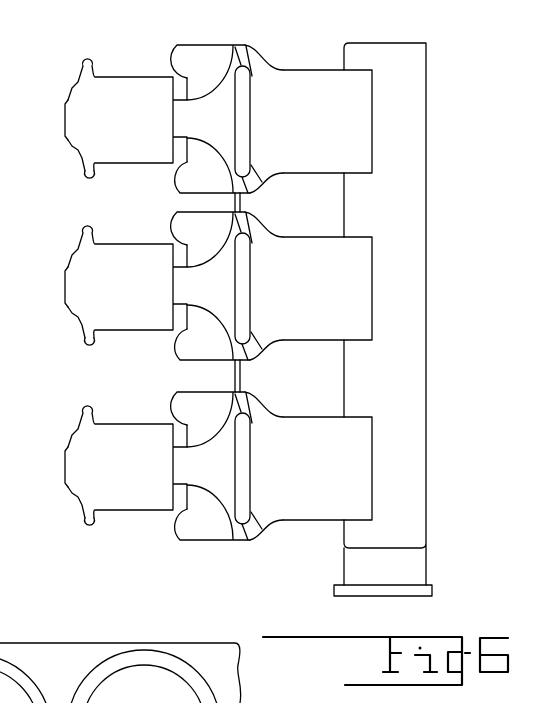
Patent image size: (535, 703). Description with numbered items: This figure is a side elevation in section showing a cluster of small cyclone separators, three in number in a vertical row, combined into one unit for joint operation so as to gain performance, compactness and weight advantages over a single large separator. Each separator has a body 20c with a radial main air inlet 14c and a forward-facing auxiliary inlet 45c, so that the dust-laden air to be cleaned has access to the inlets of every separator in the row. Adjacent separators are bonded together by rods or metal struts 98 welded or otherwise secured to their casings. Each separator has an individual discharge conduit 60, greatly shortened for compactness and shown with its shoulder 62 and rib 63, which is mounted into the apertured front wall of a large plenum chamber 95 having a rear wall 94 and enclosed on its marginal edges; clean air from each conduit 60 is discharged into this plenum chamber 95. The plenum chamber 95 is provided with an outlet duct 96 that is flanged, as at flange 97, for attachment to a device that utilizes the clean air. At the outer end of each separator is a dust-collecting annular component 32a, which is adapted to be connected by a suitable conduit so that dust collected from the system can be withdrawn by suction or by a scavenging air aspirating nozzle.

The main air inlet 14c is at (209, 50).
The piston 20c is at (137, 124).
The auxiliary inlet 45c is at (66, 121).
The dust-collecting annular component 32a is at (82, 177).
The discharge conduit 60 is at (314, 119).
The shoulder 62 is at (322, 69).
The rib 63 is at (258, 60).
The rear wall 94 is at (426, 291).
The plenum chamber 95 is at (400, 366).
The outlet duct 96 is at (426, 563).
The flange 97 is at (380, 597).
The rod or metal strut 98 is at (243, 203).